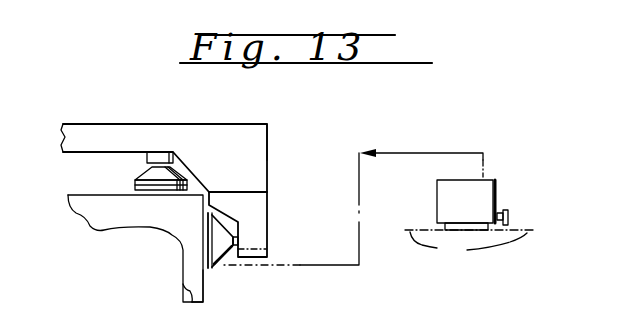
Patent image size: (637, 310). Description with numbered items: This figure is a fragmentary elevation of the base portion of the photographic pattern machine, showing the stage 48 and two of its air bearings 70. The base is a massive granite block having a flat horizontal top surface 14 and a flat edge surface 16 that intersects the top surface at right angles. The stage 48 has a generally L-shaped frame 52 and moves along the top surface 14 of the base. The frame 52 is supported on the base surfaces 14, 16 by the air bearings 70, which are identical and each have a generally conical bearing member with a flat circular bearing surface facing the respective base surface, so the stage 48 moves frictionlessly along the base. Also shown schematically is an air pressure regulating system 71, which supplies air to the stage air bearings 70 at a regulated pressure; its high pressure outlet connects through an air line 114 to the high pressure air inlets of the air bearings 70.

The L-shaped frame 52 is at (111, 127).
The stage 48 is at (299, 103).
The air bearings 70 is at (118, 180).
The top surface 14 is at (105, 190).
The edge surface 16 is at (209, 290).
The air line 114 is at (445, 157).
The air pressure regulating system 71 is at (510, 195).